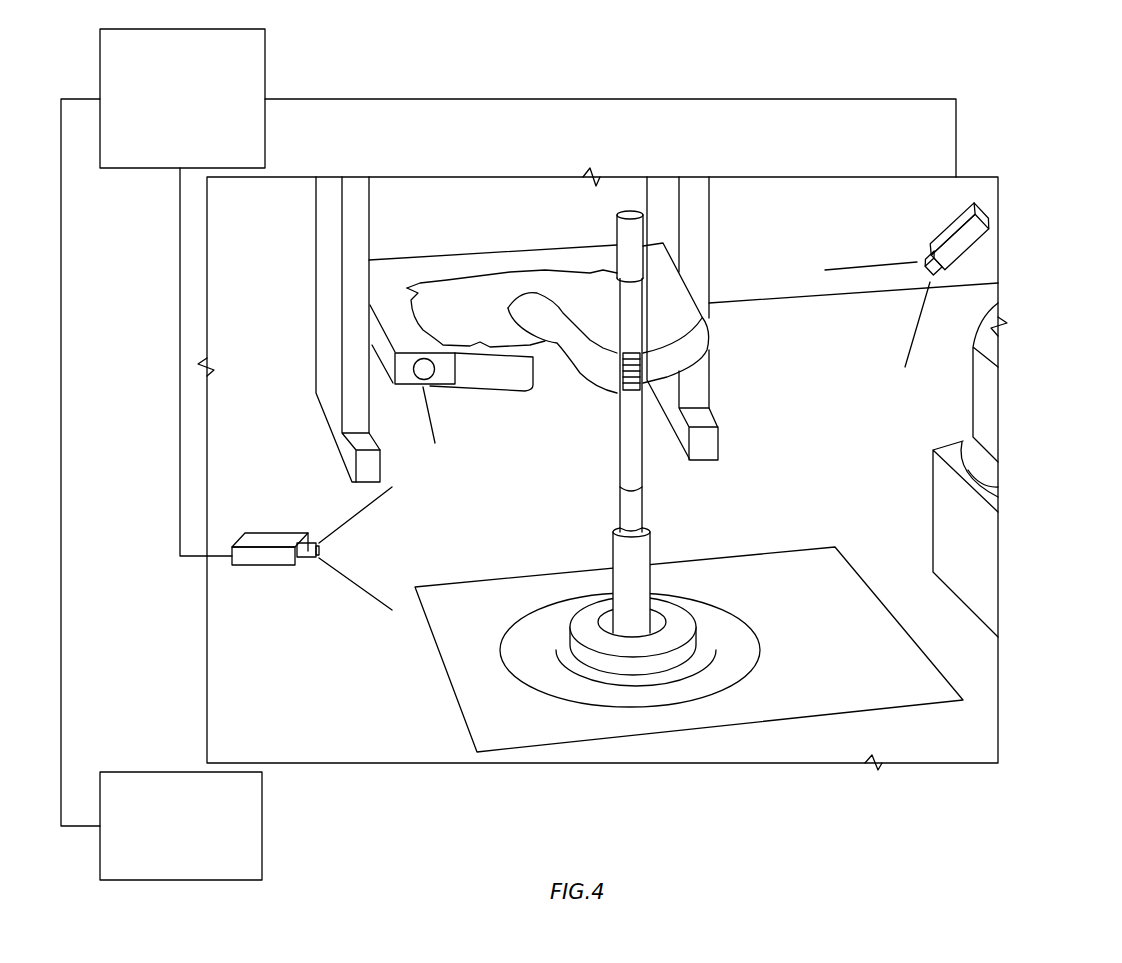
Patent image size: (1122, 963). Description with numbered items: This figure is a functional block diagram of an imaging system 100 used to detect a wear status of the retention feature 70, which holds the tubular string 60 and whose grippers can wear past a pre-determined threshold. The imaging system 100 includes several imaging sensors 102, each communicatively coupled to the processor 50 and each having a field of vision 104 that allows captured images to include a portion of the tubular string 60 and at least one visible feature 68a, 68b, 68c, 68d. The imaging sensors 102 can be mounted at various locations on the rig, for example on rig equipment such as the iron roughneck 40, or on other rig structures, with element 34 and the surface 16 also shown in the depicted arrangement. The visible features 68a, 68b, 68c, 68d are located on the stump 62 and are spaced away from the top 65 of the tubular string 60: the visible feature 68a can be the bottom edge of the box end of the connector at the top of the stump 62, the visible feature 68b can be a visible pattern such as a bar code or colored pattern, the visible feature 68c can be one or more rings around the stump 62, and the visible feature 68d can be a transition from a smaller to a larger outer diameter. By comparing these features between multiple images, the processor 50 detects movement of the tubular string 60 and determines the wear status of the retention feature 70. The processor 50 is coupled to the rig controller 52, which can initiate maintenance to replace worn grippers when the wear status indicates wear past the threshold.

The imaging system 100 is at (460, 72).
The processor 50 is at (194, 116).
The rig controller 52 is at (194, 840).
The table 16 is at (963, 738).
The retention feature 70 is at (583, 622).
The tubular string 60 is at (625, 553).
The stump 62 is at (633, 472).
The top 65 is at (647, 232).
The visible feature 68a is at (606, 275).
The visible feature 68b is at (623, 372).
The visible feature 68c is at (620, 490).
The visible feature 68d is at (618, 530).
The iron roughneck 40 is at (473, 312).
The dispensing device 34 is at (973, 543).
The imaging sensor 102 is at (272, 566).
The field of vision 104 is at (380, 559).